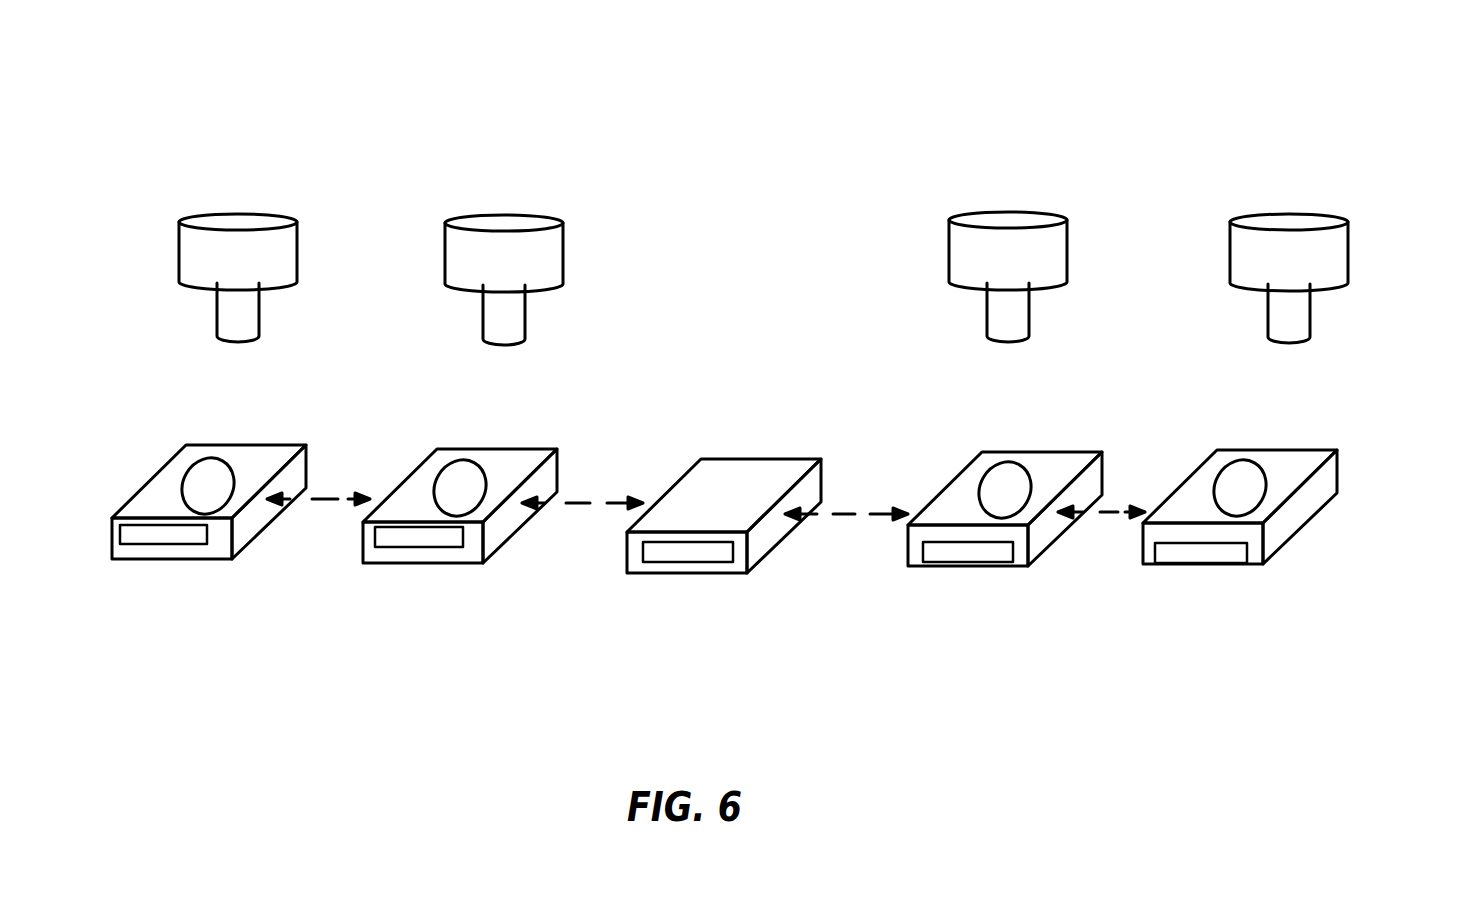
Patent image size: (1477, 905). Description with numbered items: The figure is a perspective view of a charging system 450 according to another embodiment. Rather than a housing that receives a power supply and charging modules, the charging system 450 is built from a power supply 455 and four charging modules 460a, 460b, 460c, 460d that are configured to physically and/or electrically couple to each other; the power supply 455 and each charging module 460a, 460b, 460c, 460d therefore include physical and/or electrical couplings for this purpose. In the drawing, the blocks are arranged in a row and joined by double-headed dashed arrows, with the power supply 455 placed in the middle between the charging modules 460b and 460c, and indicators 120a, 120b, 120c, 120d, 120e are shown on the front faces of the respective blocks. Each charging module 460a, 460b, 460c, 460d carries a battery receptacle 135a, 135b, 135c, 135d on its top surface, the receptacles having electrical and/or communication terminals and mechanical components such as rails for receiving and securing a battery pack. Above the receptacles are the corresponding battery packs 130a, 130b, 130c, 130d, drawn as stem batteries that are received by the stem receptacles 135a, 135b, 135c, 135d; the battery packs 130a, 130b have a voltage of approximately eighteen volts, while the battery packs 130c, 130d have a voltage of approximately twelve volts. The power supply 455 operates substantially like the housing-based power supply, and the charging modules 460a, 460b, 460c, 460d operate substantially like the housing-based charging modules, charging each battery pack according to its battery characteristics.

The charging system 450 is at (211, 109).
The battery pack 130a is at (297, 237).
The battery pack 130b is at (563, 238).
The battery pack 130c is at (1067, 235).
The battery pack 130d is at (1348, 236).
The indicator 120a is at (209, 502).
The indicator 120b is at (460, 506).
The indicator 120c is at (1005, 509).
The indicator 120d is at (1240, 508).
The indicator 120e is at (724, 516).
The battery receptacle 135a is at (203, 468).
The battery receptacle 135b is at (473, 462).
The battery receptacle 135c is at (985, 472).
The battery receptacle 135d is at (1263, 467).
The charging module 460a is at (222, 447).
The charging module 460b is at (502, 447).
The charging module 460c is at (1000, 450).
The charging module 460d is at (1272, 450).
The power supply 455 is at (745, 457).